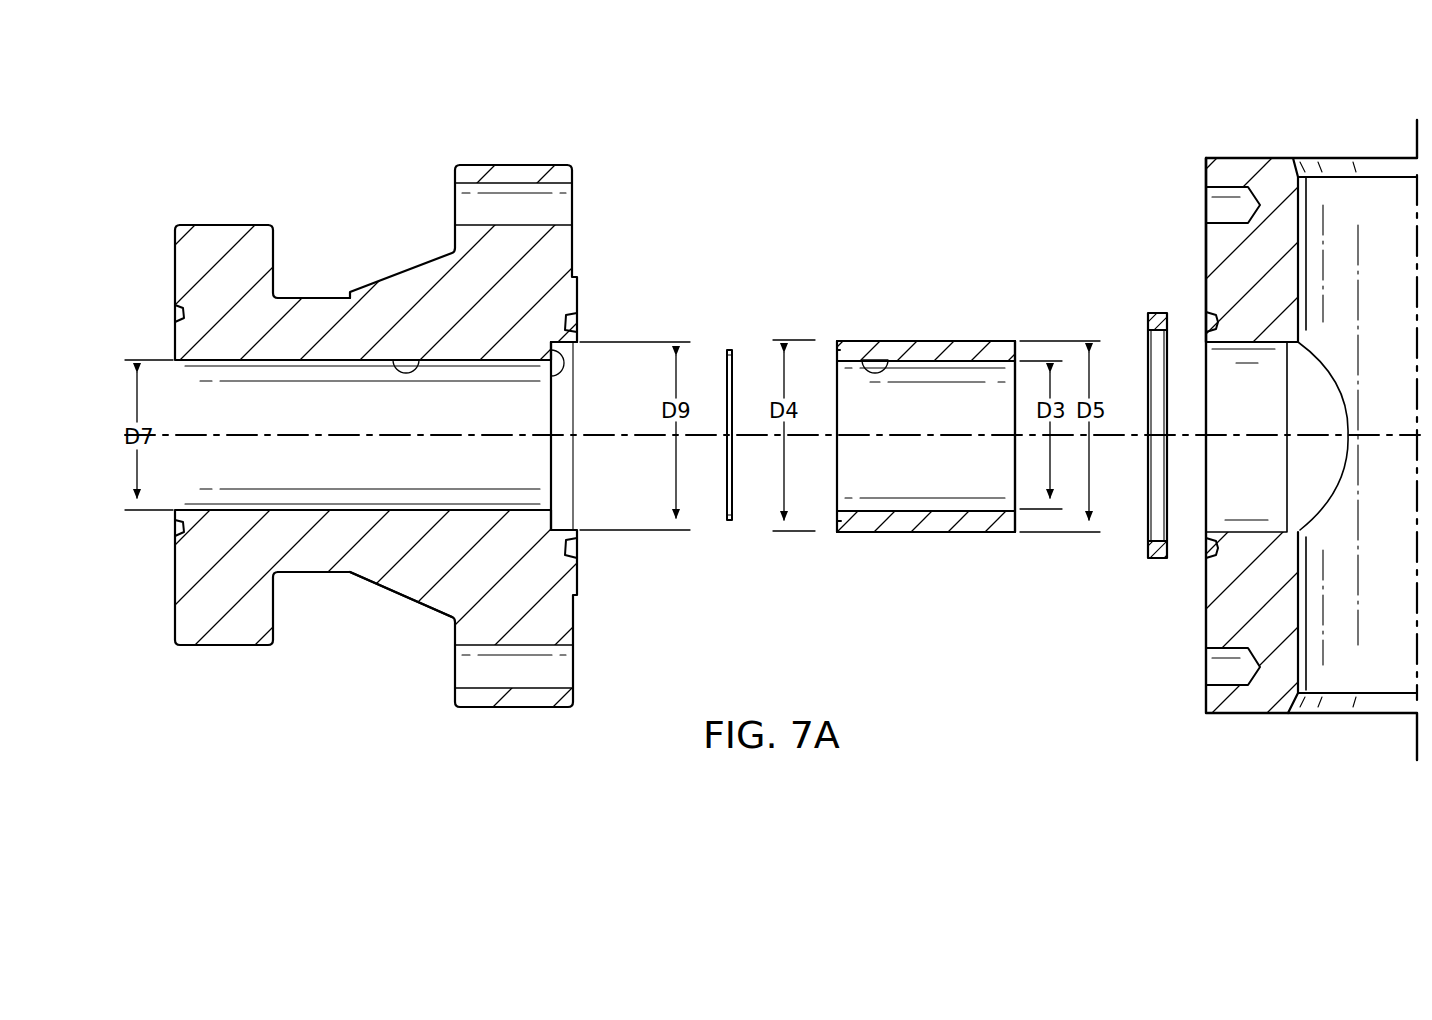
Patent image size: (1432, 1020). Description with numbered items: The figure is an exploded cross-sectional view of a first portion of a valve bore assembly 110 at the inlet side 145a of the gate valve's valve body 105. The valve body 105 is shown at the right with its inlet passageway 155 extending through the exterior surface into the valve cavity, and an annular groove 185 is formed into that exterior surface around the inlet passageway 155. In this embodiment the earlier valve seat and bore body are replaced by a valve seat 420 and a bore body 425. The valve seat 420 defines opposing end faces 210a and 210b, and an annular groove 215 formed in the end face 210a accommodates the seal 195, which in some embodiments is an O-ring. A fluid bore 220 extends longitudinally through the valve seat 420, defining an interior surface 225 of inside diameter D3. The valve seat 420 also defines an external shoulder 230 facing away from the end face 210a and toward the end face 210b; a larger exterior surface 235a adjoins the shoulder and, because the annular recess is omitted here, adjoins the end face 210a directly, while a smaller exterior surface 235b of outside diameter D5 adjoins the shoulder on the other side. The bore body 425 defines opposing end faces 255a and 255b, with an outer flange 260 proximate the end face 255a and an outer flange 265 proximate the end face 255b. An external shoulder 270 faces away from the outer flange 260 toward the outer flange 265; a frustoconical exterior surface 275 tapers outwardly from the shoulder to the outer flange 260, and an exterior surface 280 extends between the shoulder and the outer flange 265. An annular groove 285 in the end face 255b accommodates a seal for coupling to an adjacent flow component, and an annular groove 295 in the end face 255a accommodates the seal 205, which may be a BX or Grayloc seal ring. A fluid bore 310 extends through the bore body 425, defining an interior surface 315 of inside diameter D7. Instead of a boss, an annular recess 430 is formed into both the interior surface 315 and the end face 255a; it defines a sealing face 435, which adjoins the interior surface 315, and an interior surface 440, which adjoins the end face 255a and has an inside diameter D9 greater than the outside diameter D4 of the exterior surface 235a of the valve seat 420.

The valve body 105 is at (1213, 618).
The valve bore assembly 110 is at (622, 90).
The inlet side 145a is at (1194, 232).
The inlet passageway 155 is at (1266, 407).
The annular groove 185 is at (1216, 322).
The seal 195 is at (728, 522).
The seal 205 is at (1158, 312).
The end face 210a is at (836, 532).
The end face 210b is at (1016, 532).
The annular groove 215 is at (836, 346).
The fluid bore 220 is at (946, 482).
The interior surface 225 is at (870, 358).
The external shoulder 230 is at (940, 340).
The exterior surface 235a is at (918, 533).
The exterior surface 235b is at (980, 533).
The end face 255a is at (580, 292).
The end face 255b is at (174, 320).
The outer flange 260 is at (512, 164).
The outer flange 265 is at (208, 225).
The external shoulder 270 is at (350, 296).
The exterior surface 275 is at (390, 595).
The exterior surface 280 is at (303, 573).
The annular groove 285 is at (174, 526).
The annular groove 295 is at (574, 548).
The fluid bore 310 is at (406, 482).
The interior surface 315 is at (410, 358).
The valve seat 420 is at (950, 255).
The bore body 425 is at (327, 125).
The annular recess 430 is at (563, 514).
The sealing face 435 is at (560, 370).
The interior surface 440 is at (561, 352).